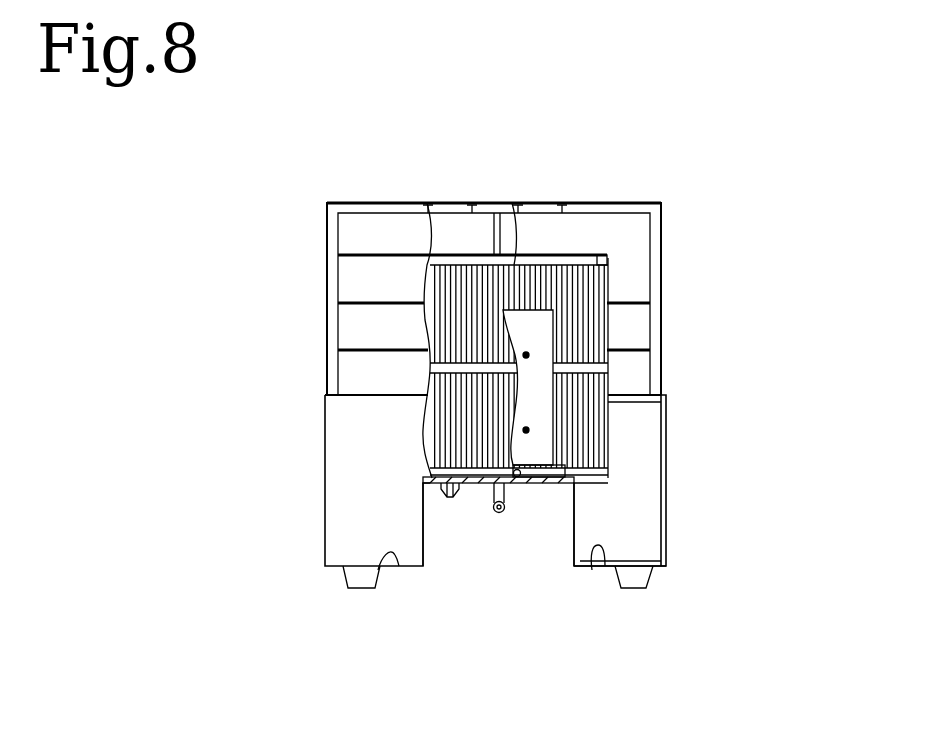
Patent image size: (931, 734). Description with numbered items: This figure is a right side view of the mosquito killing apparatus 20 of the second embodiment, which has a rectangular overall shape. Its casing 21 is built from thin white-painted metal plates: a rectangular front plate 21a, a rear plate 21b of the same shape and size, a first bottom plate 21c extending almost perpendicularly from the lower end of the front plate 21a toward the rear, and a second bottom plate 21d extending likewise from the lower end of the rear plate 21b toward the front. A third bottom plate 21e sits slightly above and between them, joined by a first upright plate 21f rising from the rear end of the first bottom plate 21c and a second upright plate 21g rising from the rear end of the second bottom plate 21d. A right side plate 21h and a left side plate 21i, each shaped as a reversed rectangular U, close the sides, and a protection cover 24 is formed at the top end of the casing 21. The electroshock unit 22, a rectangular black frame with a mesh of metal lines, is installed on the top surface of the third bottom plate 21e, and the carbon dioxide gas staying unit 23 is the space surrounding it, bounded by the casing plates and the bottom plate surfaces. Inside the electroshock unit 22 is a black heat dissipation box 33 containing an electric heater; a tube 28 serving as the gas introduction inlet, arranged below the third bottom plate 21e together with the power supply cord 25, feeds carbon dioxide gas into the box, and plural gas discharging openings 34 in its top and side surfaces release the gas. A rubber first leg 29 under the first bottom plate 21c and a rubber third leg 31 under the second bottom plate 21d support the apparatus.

The mosquito killing apparatus 20 is at (310, 312).
The casing 21 is at (521, 524).
The front plate 21a is at (327, 512).
The rear plate 21b is at (665, 527).
The first bottom plate 21c is at (378, 570).
The second bottom plate 21d is at (592, 570).
The third bottom plate 21e is at (530, 483).
The first upright plate 21f is at (423, 527).
The second upright plate 21g is at (575, 502).
The right side plate 21h is at (353, 452).
The left side plate 21i is at (648, 437).
The electroshock unit 22 is at (463, 265).
The carbon dioxide gas staying unit 23 is at (633, 492).
The protection cover 24 is at (373, 201).
The power supply cord 25 is at (452, 498).
The tube 28 is at (500, 512).
The first leg 29 is at (347, 585).
The third leg 31 is at (642, 575).
The heat dissipation box 33 is at (535, 337).
The carbon dioxide gas discharging openings 34 is at (526, 355).